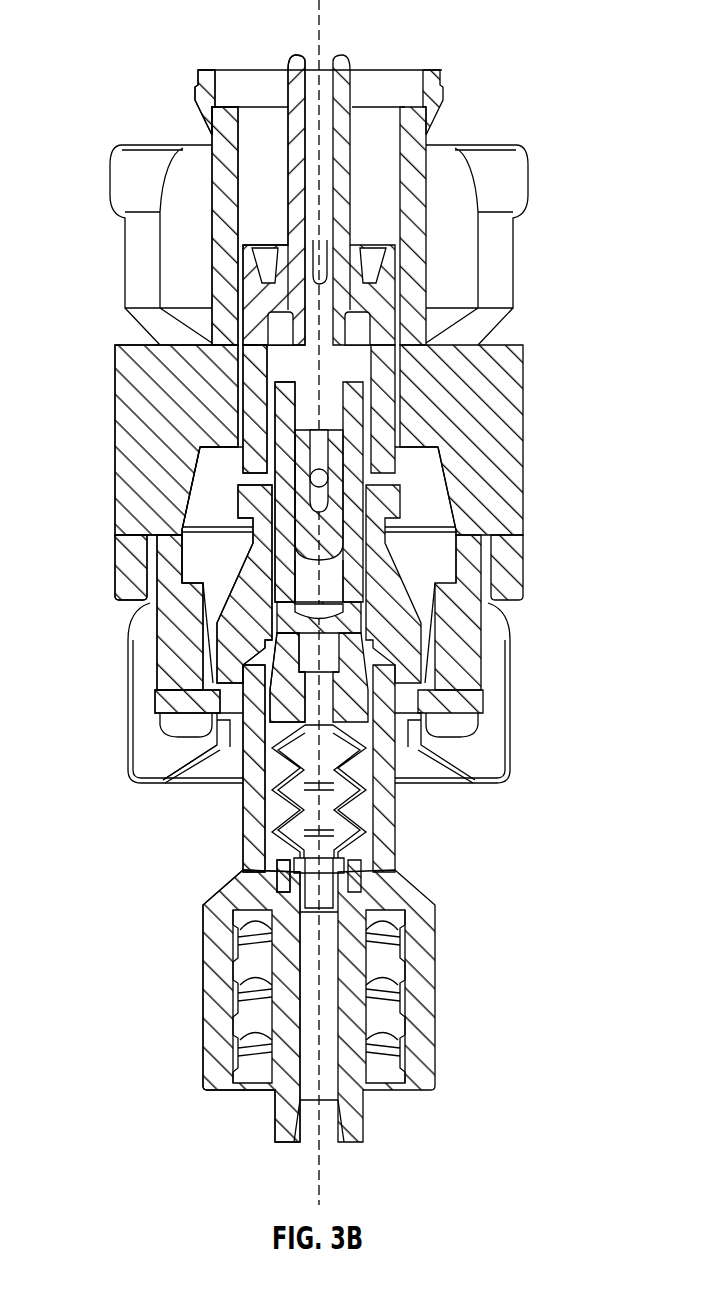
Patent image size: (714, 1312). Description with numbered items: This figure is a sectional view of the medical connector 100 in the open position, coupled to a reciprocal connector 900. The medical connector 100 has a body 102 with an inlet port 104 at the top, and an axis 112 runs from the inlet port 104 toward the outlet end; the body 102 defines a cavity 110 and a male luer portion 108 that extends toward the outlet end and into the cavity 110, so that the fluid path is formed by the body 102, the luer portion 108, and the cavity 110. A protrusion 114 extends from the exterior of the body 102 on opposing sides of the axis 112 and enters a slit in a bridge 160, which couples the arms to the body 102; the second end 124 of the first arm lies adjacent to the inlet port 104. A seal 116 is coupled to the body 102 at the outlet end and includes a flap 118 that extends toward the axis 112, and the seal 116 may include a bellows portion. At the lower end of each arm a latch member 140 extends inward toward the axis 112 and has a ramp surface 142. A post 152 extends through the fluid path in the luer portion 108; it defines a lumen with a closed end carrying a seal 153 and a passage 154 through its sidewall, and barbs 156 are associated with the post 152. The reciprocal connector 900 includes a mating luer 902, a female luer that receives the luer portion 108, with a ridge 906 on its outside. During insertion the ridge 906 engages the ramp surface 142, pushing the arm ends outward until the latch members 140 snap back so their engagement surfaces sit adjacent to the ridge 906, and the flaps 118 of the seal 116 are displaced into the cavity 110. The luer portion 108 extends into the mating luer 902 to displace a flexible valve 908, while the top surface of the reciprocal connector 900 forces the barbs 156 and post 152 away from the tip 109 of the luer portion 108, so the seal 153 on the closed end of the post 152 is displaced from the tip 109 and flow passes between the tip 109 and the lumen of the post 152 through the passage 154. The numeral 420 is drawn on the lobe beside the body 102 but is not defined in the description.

The medical connector 100 is at (125, 42).
The body 102 is at (415, 218).
The inlet port 104 is at (408, 64).
The male luer portion 108 is at (330, 530).
The open tip 109 is at (352, 602).
The cavity 110 is at (215, 480).
The axis 112 is at (322, 32).
The protrusion 114 is at (128, 372).
The seal 116 is at (170, 700).
The flap 118 is at (195, 635).
The second end 124 is at (494, 142).
The latch member 140 is at (150, 765).
The ramp surface 142 is at (218, 777).
The post 152 is at (353, 310).
The seal 153 is at (385, 460).
The passage 154 is at (308, 480).
The barbs 156 is at (340, 365).
The bridge 160 is at (128, 557).
The wing 420 is at (175, 230).
The reciprocal connector 900 is at (480, 885).
The mating luer 902 is at (368, 612).
The ridge 906 is at (400, 660).
The flexible valve 908 is at (352, 675).